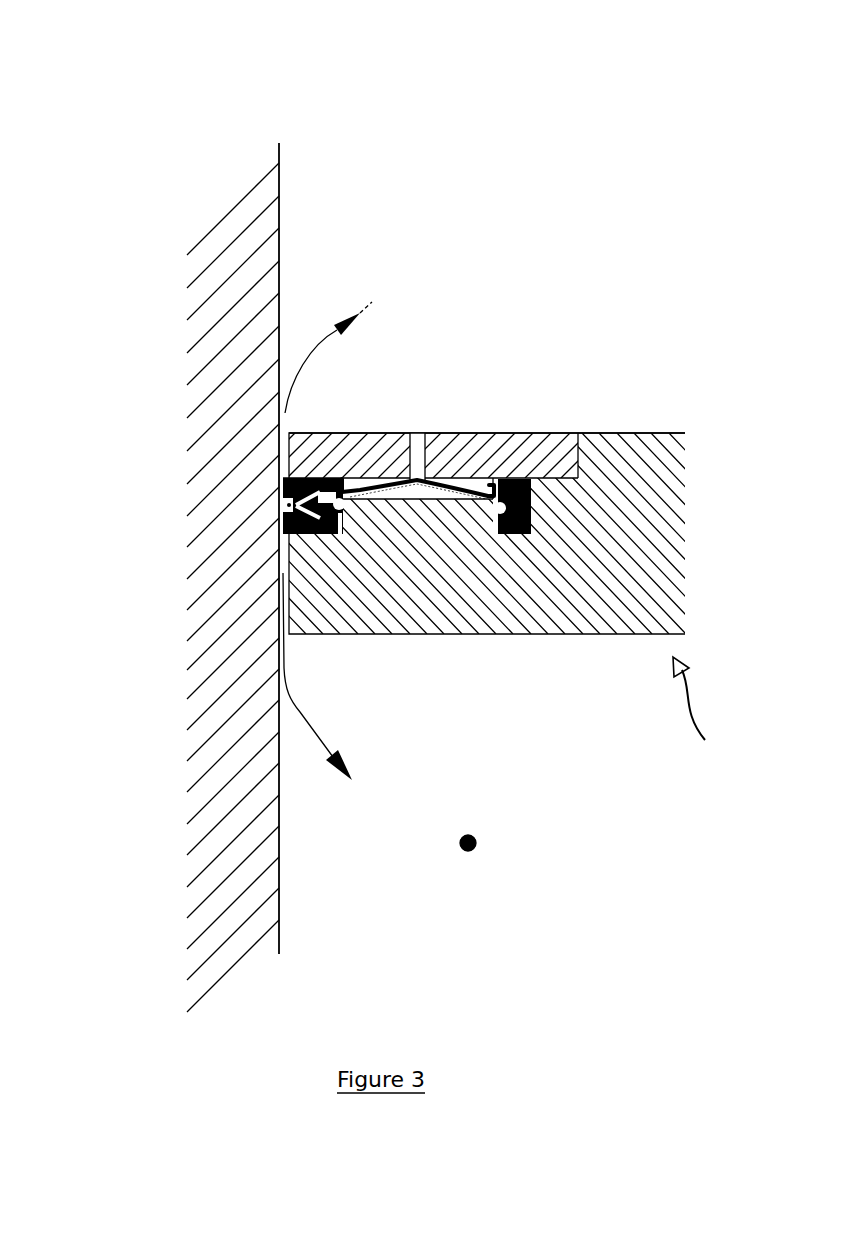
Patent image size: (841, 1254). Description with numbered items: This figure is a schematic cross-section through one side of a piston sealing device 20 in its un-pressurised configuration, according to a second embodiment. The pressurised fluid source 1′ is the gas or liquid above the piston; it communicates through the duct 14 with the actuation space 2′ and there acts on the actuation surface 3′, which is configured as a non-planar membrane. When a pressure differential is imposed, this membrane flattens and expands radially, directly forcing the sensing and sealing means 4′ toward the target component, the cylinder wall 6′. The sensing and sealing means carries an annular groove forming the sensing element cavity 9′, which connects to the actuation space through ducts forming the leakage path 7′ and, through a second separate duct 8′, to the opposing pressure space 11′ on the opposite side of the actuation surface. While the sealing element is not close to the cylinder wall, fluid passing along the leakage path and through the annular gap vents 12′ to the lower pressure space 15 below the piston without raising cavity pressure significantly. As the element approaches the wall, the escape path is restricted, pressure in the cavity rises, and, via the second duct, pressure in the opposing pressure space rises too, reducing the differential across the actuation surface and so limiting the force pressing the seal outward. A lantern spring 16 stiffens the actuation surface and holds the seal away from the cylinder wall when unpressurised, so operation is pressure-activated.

The pressurised fluid source 1′ is at (481, 211).
The actuation space 2′ is at (470, 467).
The actuation surface 3′ is at (392, 483).
The sensing and sealing means 4′ is at (330, 464).
The cylinder wall 6′ is at (279, 312).
The leakage path 7′ is at (349, 535).
The second duct 8′ is at (323, 535).
The sensing element cavity 9′ is at (293, 535).
The opposing pressure space 11′ is at (427, 493).
The vents 12′ is at (412, 279).
The duct 14 is at (417, 444).
The lower pressure space 15 is at (468, 843).
The lantern spring 16 is at (472, 499).
The piston sealing device 20 is at (710, 707).